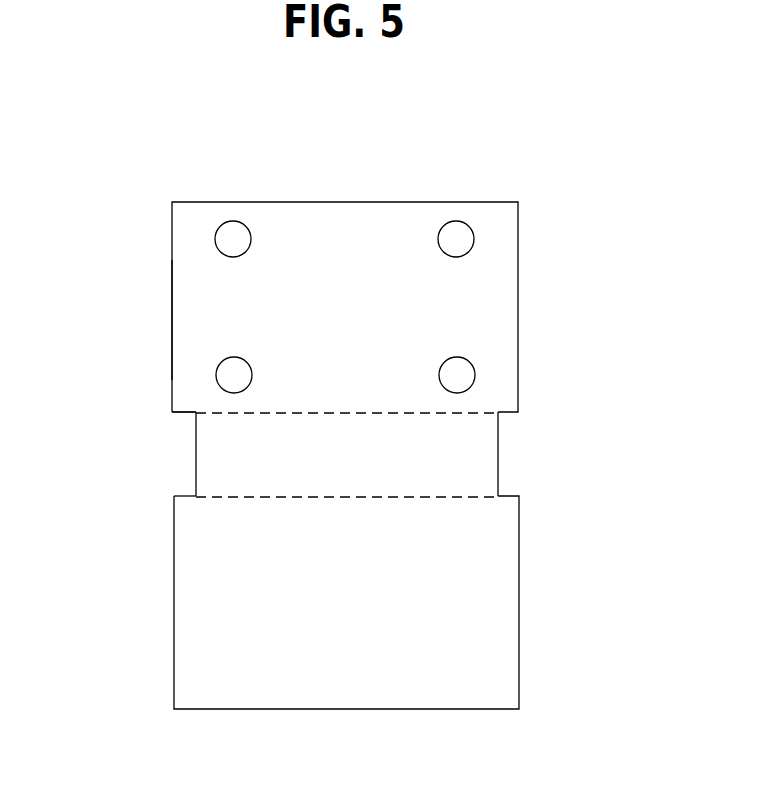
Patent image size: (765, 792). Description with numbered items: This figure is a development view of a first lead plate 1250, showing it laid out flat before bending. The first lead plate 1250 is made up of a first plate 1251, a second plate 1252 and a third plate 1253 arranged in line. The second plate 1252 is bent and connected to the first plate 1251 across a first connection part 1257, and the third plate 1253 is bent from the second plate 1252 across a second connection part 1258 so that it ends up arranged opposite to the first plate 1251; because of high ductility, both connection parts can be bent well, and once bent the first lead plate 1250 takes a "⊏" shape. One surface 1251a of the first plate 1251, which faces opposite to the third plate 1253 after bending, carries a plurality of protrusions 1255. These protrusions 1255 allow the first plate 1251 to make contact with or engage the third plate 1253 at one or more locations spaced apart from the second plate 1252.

The first lead plate 1250 is at (544, 193).
The first plate 1251 is at (270, 202).
The one surface of the first plate 1251a is at (195, 313).
The protrusions 1255 is at (230, 240).
The first connection part 1257 is at (215, 411).
The second plate 1252 is at (498, 447).
The second connection part 1258 is at (480, 497).
The third plate 1253 is at (519, 604).